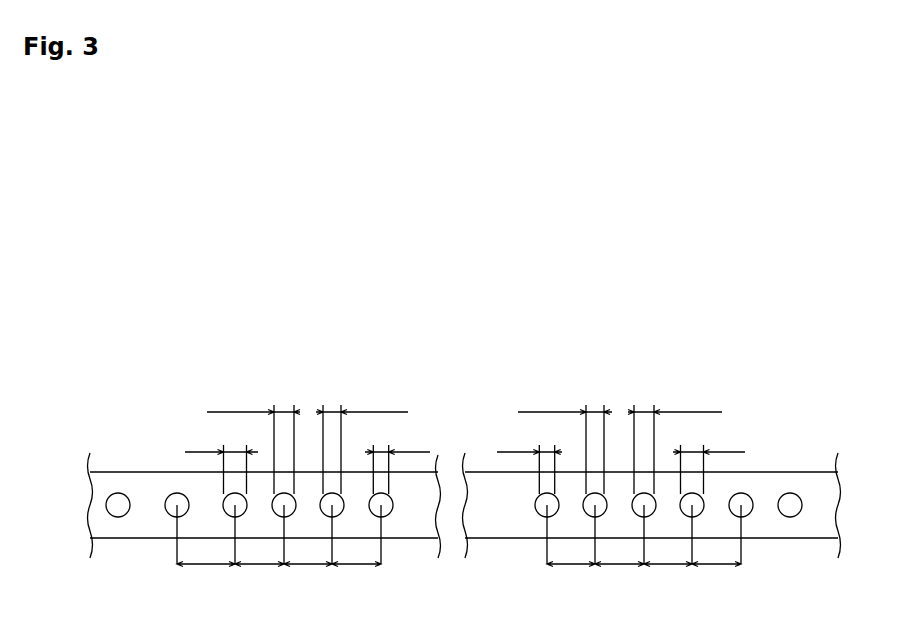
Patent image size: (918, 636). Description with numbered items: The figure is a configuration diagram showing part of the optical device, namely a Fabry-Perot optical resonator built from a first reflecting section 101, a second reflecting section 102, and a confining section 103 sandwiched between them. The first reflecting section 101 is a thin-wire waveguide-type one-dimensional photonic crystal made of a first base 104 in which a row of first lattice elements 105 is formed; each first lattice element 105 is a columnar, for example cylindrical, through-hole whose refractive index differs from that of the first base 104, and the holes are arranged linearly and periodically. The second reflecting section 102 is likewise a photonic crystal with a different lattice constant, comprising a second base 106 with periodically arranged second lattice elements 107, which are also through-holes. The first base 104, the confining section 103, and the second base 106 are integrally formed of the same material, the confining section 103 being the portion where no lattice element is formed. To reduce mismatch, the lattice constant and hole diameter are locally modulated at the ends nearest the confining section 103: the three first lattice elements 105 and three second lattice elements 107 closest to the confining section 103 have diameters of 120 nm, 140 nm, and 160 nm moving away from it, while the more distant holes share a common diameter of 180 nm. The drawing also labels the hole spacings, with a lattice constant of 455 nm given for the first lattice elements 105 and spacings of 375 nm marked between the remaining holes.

The first reflecting section 101 is at (418, 375).
The second reflecting section 102 is at (860, 375).
The confining section 103 is at (519, 375).
The first base 104 is at (120, 538).
The first lattice element 105 is at (118, 493).
The second base 106 is at (797, 538).
The second lattice element 107 is at (790, 493).
The lattice element diameter of 120 nm 120 is at (463, 461).
The lattice element diameter of 140 nm 140 is at (464, 441).
The lattice element diameter of 160 nm 160 is at (464, 441).
The lattice element diameter of 180 nm 180 is at (466, 461).
The lattice constant of 375 nm 375 is at (488, 548).
The lattice constant of 455 nm 455 is at (206, 548).